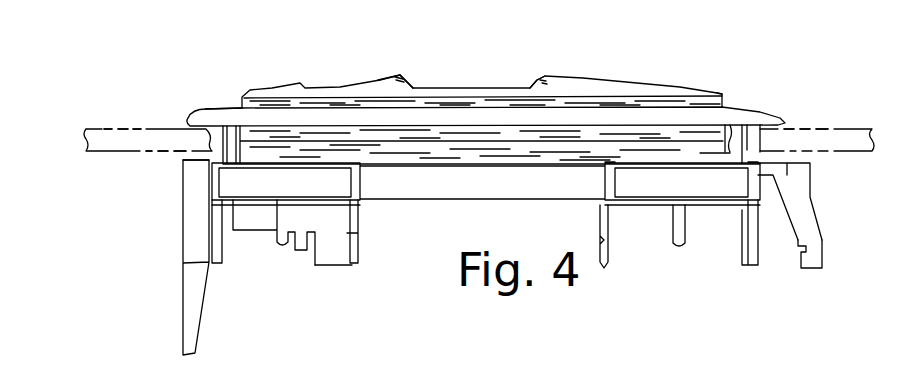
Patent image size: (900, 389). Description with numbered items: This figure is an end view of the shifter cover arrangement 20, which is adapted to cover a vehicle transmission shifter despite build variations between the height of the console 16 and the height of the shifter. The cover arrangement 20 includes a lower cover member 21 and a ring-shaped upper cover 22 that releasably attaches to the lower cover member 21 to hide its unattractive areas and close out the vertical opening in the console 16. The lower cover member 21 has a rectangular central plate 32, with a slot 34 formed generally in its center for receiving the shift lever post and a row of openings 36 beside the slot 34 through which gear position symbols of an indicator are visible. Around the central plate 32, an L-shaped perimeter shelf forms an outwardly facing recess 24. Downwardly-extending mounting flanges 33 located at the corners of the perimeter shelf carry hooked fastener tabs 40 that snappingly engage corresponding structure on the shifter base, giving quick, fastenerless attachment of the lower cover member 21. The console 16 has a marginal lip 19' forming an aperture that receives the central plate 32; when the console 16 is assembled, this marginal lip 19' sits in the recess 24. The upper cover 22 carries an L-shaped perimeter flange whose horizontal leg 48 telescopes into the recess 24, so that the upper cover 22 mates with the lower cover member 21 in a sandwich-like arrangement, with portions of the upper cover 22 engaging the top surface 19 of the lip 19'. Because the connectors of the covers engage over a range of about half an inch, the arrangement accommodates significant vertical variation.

The console 16 is at (74, 146).
The top surface of lip 19 is at (466, 97).
The marginal lip 19' is at (144, 164).
The cover arrangement 20 is at (706, 46).
The lower cover member 21 is at (410, 74).
The upper cover 22 is at (200, 107).
The outwardly facing recess 24 is at (184, 158).
The central plate 32 is at (619, 80).
The mounting flanges 33 is at (182, 292).
The slot 34 is at (519, 88).
The openings 36 is at (344, 87).
The hooked fastener tabs 40 is at (366, 247).
The horizontal leg 48 is at (218, 107).